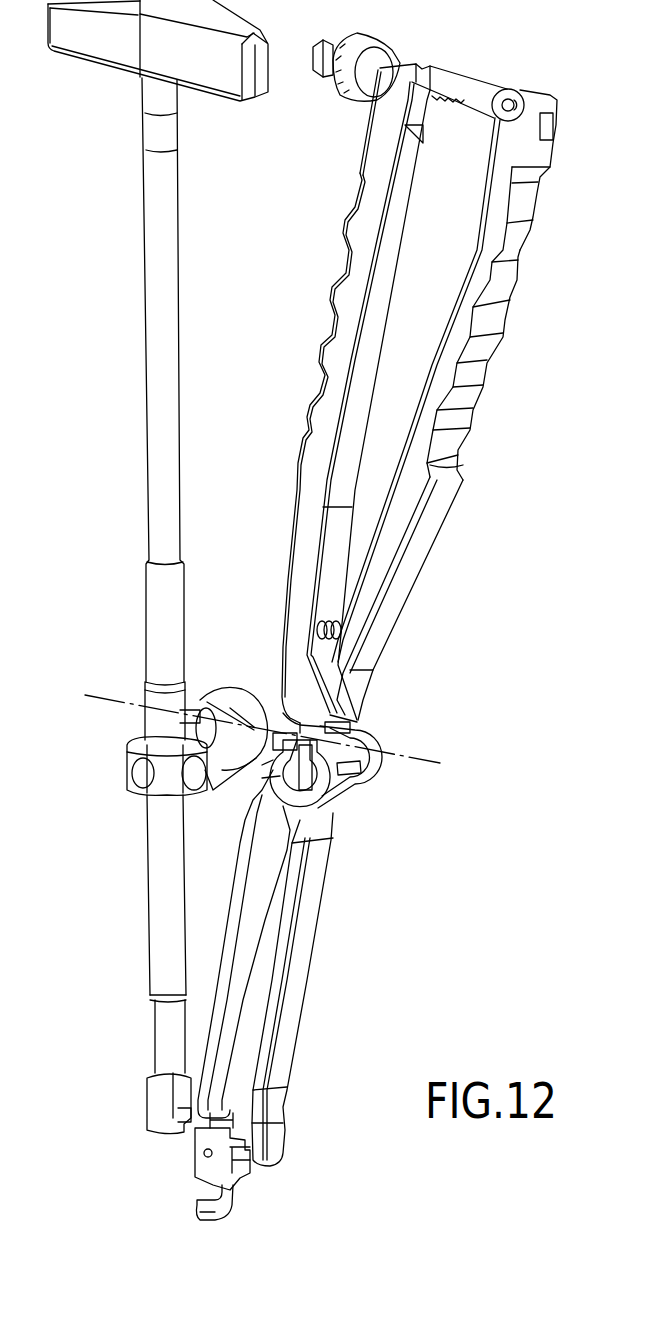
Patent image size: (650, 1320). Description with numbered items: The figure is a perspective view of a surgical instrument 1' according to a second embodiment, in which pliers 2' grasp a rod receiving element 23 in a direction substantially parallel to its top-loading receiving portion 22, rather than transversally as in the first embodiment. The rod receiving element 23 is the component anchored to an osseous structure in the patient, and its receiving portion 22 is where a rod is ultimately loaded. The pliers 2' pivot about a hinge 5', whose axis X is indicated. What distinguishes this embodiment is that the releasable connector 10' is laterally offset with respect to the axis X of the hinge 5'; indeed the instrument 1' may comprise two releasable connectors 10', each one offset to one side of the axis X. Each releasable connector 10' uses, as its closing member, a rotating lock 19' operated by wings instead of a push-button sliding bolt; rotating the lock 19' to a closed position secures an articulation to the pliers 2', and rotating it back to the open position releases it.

The surgical instrument 1' is at (422, 383).
The pliers 2' is at (299, 968).
The hinge 5' is at (292, 684).
The releasable connector 10' is at (364, 769).
The rotating lock 19' is at (303, 721).
The receiving portion 22 is at (247, 1172).
The rod receiving element 23 is at (208, 1219).
The axis X is at (422, 761).